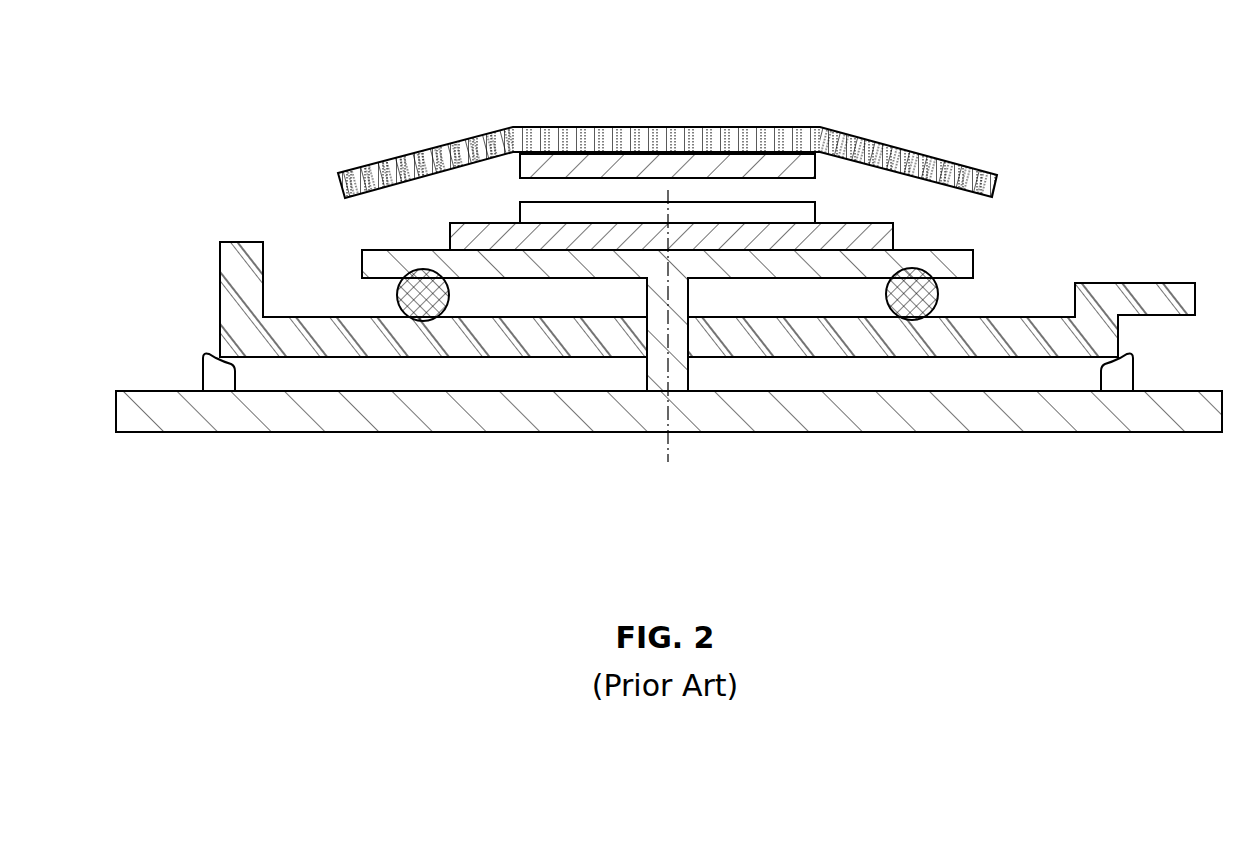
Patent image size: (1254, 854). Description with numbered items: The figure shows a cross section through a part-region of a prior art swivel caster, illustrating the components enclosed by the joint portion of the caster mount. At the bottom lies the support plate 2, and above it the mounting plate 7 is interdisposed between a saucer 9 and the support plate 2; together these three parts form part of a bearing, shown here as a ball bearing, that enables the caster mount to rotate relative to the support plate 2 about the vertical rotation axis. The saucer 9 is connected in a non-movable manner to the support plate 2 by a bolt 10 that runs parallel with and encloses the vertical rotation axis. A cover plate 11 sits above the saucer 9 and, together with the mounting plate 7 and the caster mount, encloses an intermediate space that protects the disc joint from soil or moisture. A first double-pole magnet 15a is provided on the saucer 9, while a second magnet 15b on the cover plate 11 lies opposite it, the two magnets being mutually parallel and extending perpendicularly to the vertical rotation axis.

The support plate 2 is at (1166, 410).
The mounting plate 7 is at (1098, 293).
The saucer 9 is at (972, 263).
The bolt 10 is at (658, 375).
The cover plate 11 is at (877, 155).
The first double-pole magnet 15a is at (745, 165).
The second magnet 15b is at (617, 213).